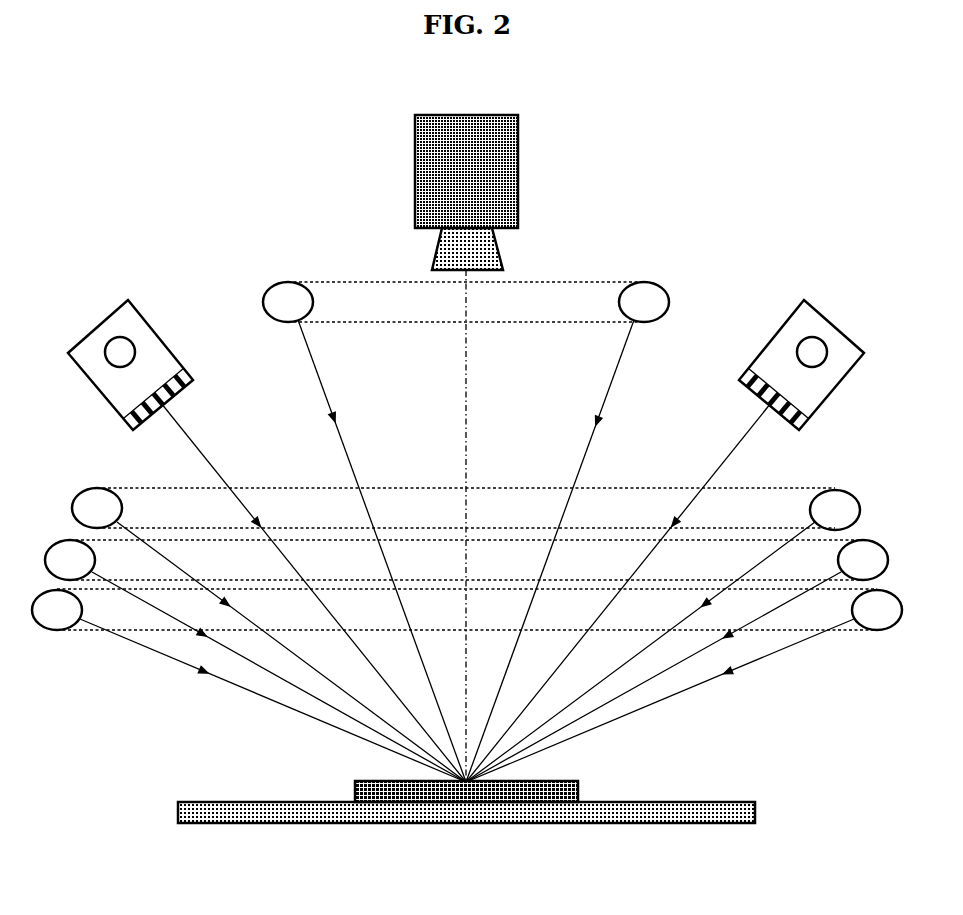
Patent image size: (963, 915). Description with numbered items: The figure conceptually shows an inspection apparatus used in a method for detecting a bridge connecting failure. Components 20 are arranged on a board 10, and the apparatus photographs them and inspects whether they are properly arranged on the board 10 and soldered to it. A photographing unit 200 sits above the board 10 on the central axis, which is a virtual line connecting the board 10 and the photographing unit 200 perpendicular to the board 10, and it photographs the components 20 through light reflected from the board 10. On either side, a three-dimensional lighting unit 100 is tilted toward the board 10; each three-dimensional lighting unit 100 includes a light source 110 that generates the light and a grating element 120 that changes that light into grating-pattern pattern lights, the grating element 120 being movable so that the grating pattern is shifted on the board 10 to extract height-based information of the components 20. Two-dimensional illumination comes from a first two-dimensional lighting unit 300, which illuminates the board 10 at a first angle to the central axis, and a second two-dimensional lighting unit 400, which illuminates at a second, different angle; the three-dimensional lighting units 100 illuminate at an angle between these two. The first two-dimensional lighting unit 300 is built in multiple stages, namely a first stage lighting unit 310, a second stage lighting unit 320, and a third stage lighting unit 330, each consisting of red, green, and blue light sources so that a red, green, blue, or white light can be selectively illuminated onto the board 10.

The board 10 is at (210, 810).
The components 20 is at (433, 792).
The 3D lighting unit 100 is at (161, 353).
The light source 110 is at (112, 358).
The grating element 120 is at (182, 394).
The photographing unit 200 is at (505, 160).
The first 2D lighting unit 300 is at (689, 636).
The first stage lighting unit 310 is at (883, 613).
The second stage lighting unit 320 is at (853, 562).
The third stage lighting unit 330 is at (828, 520).
The second 2D lighting unit 400 is at (287, 298).